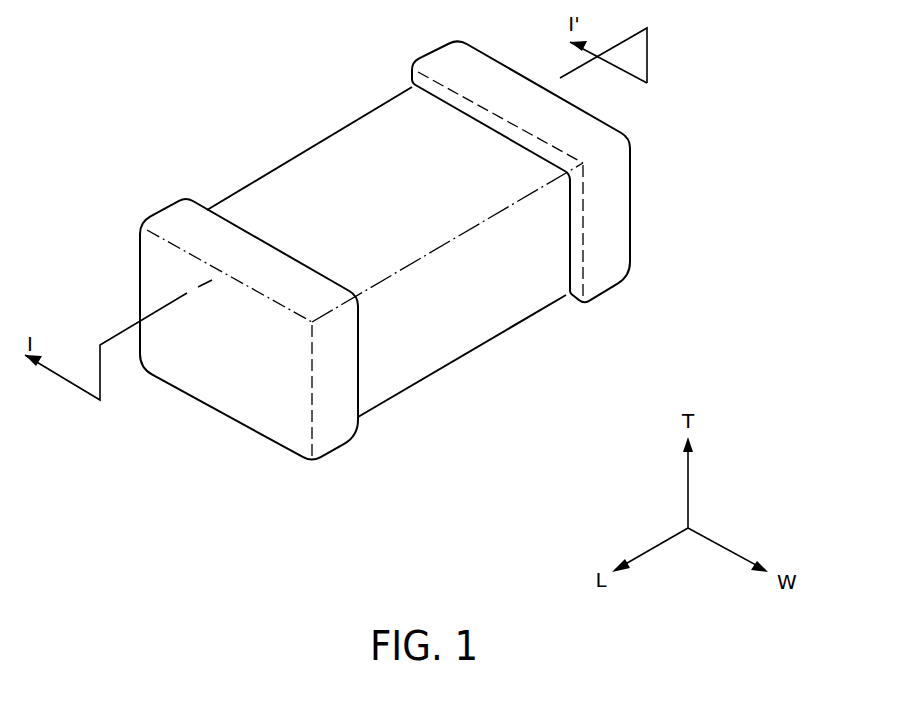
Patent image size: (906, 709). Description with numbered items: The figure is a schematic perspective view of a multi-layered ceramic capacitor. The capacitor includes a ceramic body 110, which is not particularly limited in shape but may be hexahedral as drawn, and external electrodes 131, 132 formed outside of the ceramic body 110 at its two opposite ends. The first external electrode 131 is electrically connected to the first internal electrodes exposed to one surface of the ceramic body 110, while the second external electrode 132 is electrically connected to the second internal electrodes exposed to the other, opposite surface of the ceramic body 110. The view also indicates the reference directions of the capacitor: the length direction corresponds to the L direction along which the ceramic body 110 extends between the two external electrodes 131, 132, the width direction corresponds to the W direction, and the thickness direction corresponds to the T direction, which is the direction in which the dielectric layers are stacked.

The ceramic body 110 is at (318, 162).
The first external electrode 131 is at (333, 442).
The second external electrode 132 is at (603, 275).